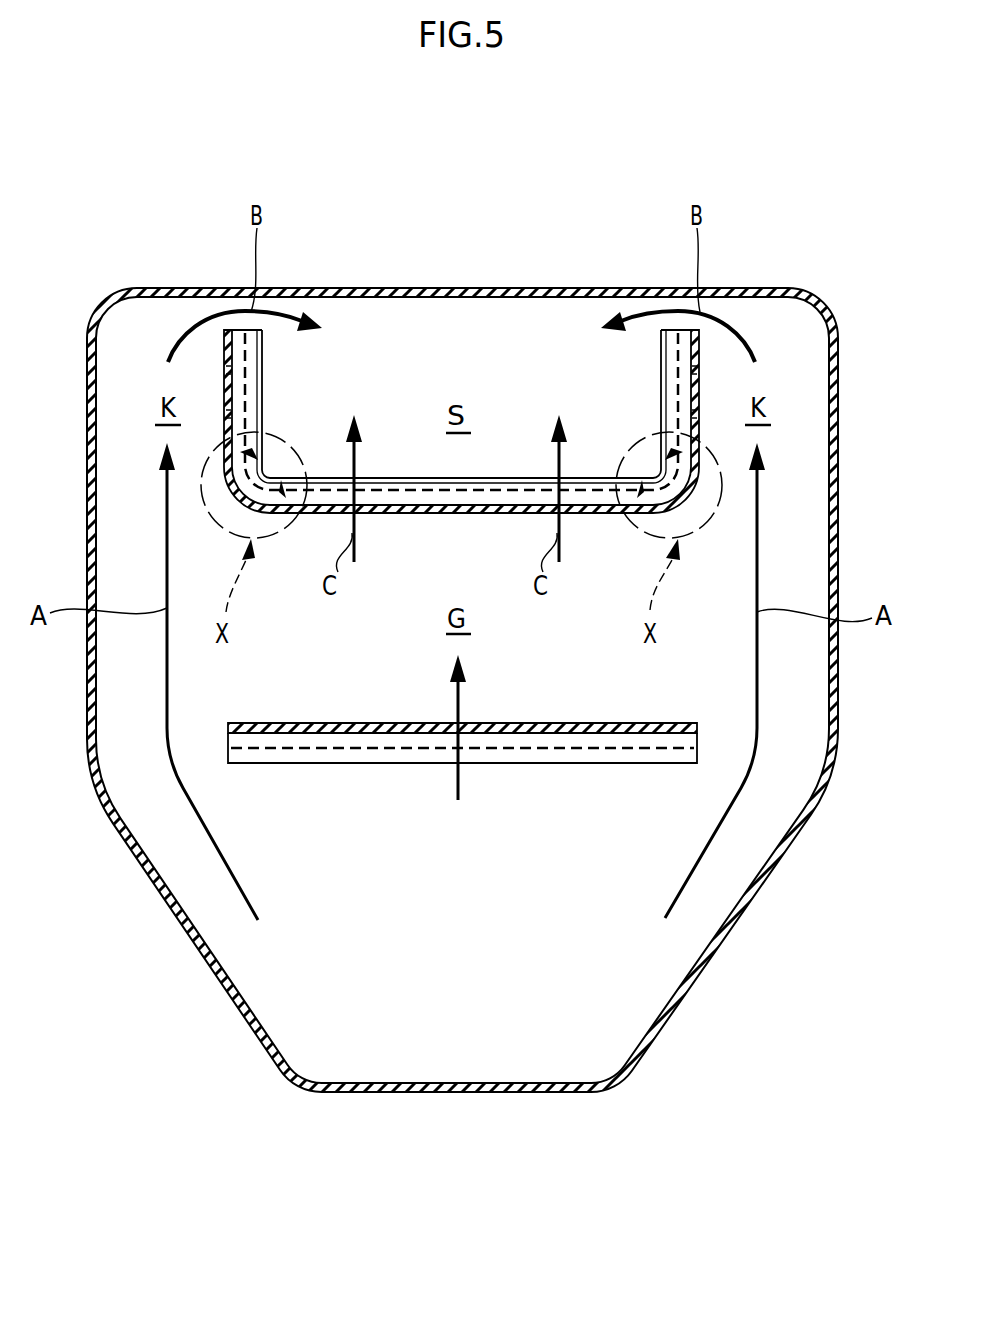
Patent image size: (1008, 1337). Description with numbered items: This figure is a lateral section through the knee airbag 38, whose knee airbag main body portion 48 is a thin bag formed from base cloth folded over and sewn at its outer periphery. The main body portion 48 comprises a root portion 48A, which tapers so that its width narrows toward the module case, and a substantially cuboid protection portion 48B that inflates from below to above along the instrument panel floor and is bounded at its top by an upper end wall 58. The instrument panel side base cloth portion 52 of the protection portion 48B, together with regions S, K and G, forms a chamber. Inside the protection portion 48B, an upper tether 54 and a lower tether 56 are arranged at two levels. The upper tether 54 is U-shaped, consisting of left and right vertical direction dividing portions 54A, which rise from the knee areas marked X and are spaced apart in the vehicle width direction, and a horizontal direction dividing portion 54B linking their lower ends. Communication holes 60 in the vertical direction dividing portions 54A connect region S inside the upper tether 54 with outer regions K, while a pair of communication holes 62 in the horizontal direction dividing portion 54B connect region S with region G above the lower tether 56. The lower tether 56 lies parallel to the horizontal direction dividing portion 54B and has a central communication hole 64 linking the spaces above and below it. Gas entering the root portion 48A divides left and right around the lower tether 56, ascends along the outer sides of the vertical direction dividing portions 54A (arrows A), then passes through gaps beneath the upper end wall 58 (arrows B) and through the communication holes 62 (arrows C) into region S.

The knee airbag main body portion 48 is at (603, 226).
The knee airbag 38 is at (496, 633).
The upper end wall 58 is at (480, 290).
The protection portion 48B is at (808, 552).
The root portion 48A is at (418, 1048).
The instrument panel side base cloth portion 52 is at (673, 963).
The upper tether 54 is at (612, 516).
The vertical direction dividing portions 54A is at (226, 358).
The horizontal direction dividing portion 54B is at (478, 515).
The communication holes 60 is at (228, 371).
The communication holes 62 is at (365, 516).
The lower tether 56 is at (678, 721).
The communication hole 64 is at (472, 721).